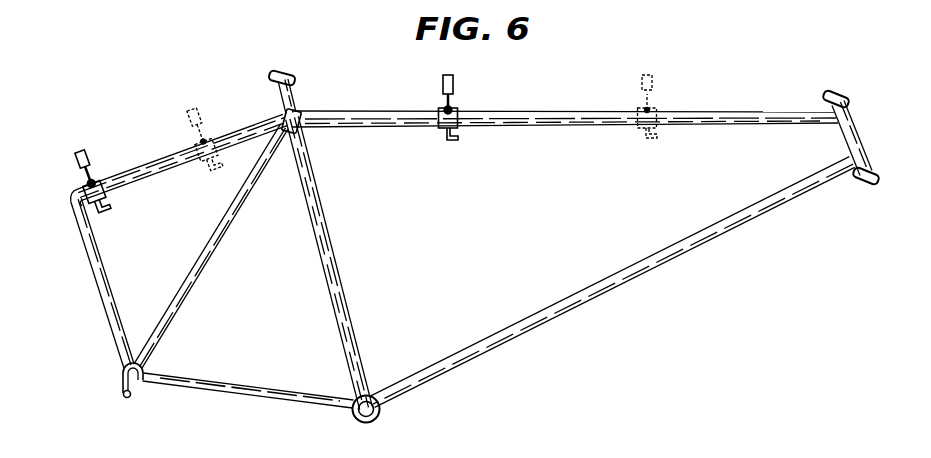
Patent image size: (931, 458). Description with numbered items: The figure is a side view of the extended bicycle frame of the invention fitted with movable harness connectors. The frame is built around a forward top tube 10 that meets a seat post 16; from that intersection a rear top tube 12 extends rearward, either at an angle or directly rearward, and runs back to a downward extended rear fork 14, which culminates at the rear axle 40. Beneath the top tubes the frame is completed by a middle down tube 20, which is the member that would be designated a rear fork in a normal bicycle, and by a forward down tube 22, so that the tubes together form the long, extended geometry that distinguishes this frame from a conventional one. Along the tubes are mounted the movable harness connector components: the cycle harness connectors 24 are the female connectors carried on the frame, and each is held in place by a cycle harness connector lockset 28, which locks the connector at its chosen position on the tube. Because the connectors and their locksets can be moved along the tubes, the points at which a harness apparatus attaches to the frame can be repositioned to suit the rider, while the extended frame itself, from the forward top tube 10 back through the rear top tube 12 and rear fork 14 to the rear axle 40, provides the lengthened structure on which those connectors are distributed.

The forward top tube 10 is at (790, 110).
The rear top tube 12 is at (240, 130).
The rear fork 14 is at (87, 262).
The seat post 16 is at (345, 320).
The middle down tube 20 is at (187, 293).
The forward down tube 22 is at (508, 324).
The cycle harness connectors (female) 24 is at (100, 162).
The cycle harness connector locksets 28 is at (100, 212).
The rear axle 40 is at (123, 377).